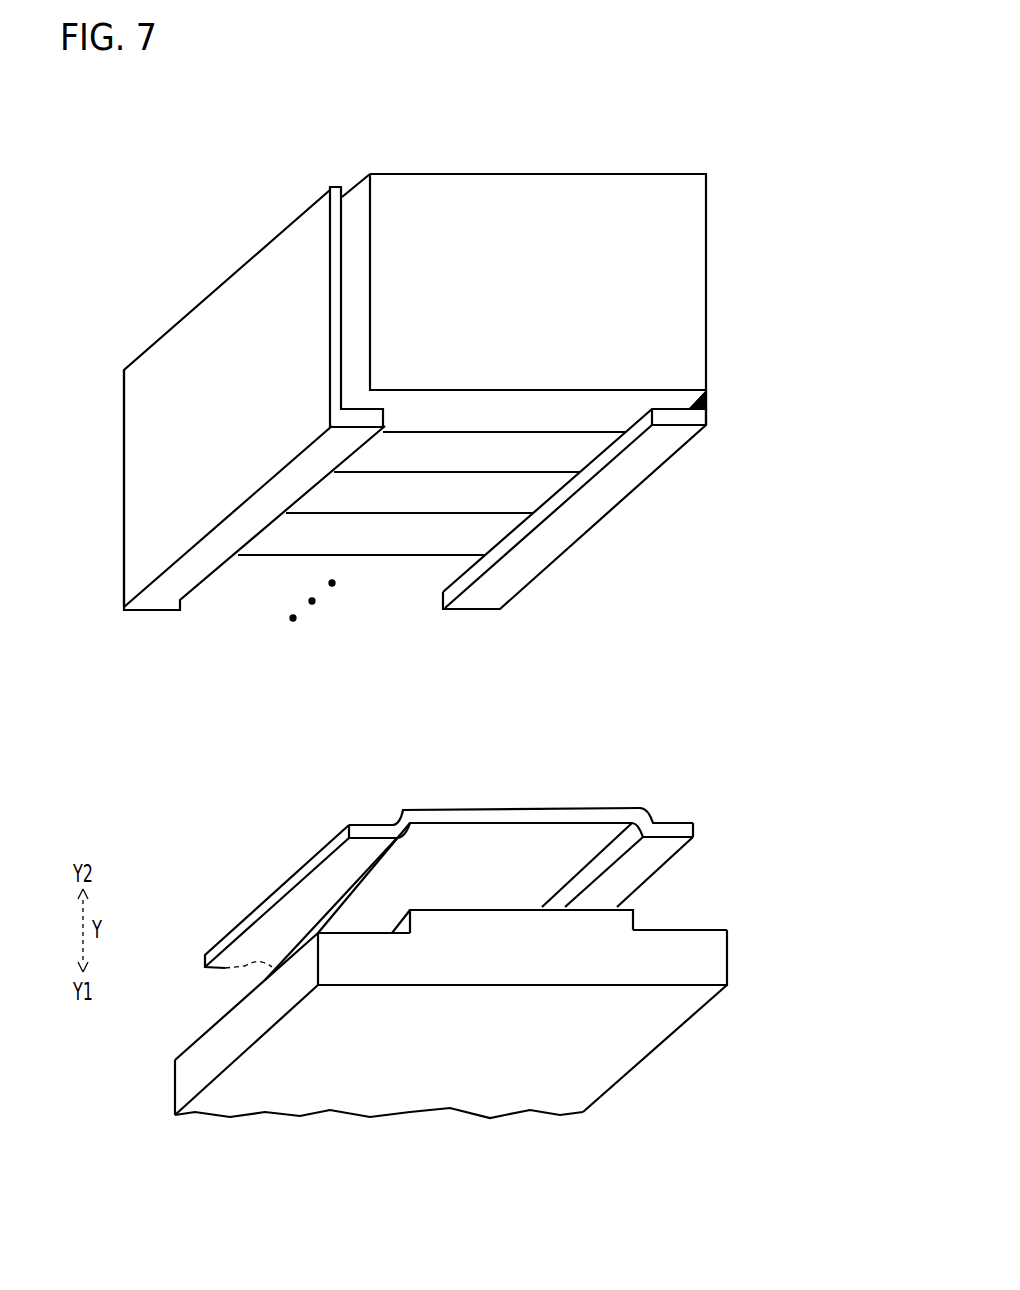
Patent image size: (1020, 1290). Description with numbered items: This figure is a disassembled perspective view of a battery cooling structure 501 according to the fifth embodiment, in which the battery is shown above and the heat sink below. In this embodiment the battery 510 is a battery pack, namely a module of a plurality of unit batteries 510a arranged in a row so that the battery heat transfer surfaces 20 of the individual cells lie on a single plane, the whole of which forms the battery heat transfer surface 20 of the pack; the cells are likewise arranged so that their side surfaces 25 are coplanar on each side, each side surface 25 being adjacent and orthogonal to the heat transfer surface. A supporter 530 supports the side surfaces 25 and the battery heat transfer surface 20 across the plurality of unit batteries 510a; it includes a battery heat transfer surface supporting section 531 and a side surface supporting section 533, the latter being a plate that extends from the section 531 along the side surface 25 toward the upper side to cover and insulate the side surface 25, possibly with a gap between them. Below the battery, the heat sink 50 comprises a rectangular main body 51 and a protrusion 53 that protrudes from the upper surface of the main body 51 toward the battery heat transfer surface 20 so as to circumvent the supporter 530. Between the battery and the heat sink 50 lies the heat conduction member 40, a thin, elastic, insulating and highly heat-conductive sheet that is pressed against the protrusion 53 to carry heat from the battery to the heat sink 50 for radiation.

The battery cooling structure 501 is at (148, 181).
The side surface 25 is at (364, 262).
The battery 510 is at (803, 438).
The unit battery 510a is at (637, 423).
The battery heat transfer surface 20 is at (380, 533).
The supporter 530 is at (170, 688).
The battery heat transfer surface supporting section 531 is at (160, 600).
The side surface supporting section 533 is at (137, 547).
The heat conduction member 40 is at (693, 832).
The heat sink 50 is at (720, 955).
The main body 51 is at (688, 933).
The protrusion 53 is at (637, 917).